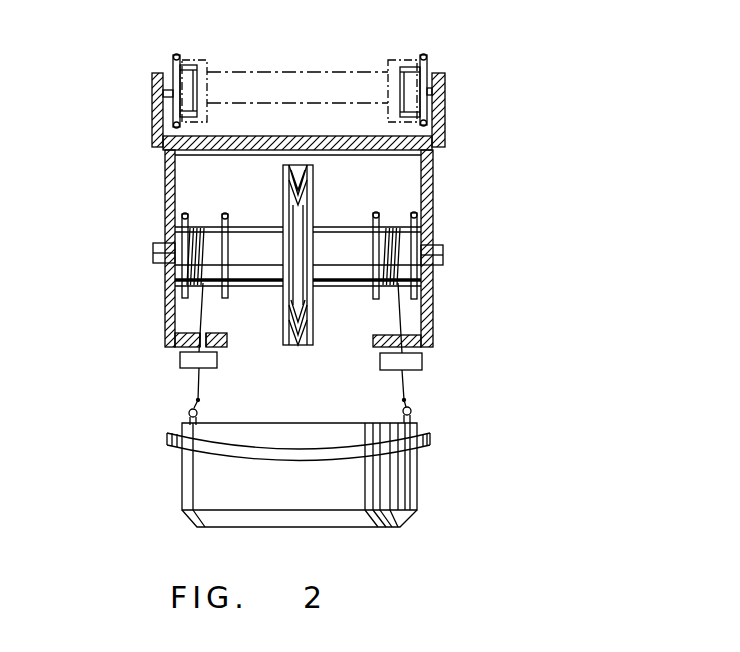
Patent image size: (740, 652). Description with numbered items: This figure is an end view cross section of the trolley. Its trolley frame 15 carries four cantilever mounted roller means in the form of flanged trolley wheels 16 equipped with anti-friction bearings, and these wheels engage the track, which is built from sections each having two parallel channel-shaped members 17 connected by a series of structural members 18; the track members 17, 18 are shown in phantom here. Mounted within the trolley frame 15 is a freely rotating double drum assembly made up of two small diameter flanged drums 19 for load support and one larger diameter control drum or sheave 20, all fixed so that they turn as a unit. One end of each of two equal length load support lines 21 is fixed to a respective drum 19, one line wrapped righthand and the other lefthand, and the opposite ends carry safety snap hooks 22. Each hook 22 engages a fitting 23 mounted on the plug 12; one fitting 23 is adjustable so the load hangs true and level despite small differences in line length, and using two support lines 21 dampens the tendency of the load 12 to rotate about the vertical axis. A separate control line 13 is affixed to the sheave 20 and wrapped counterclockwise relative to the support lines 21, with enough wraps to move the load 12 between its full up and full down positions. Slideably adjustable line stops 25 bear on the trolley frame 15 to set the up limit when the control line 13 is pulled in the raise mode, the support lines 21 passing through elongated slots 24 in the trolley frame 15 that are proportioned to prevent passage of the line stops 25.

The plug 12 is at (303, 500).
The control line 13 is at (300, 167).
The trolley frame 15 is at (151, 138).
The flanged trolley wheels 16 is at (175, 66).
The channel-shaped members 17 is at (390, 66).
The structural members 18 is at (271, 72).
The flanged drums 19 is at (208, 222).
The control drum or sheave 20 is at (290, 186).
The load support lines 21 is at (198, 386).
The safety snap hooks 22 is at (189, 410).
The fitting 23 is at (198, 415).
The elongated slots 24 is at (206, 336).
The line stops 25 is at (180, 360).